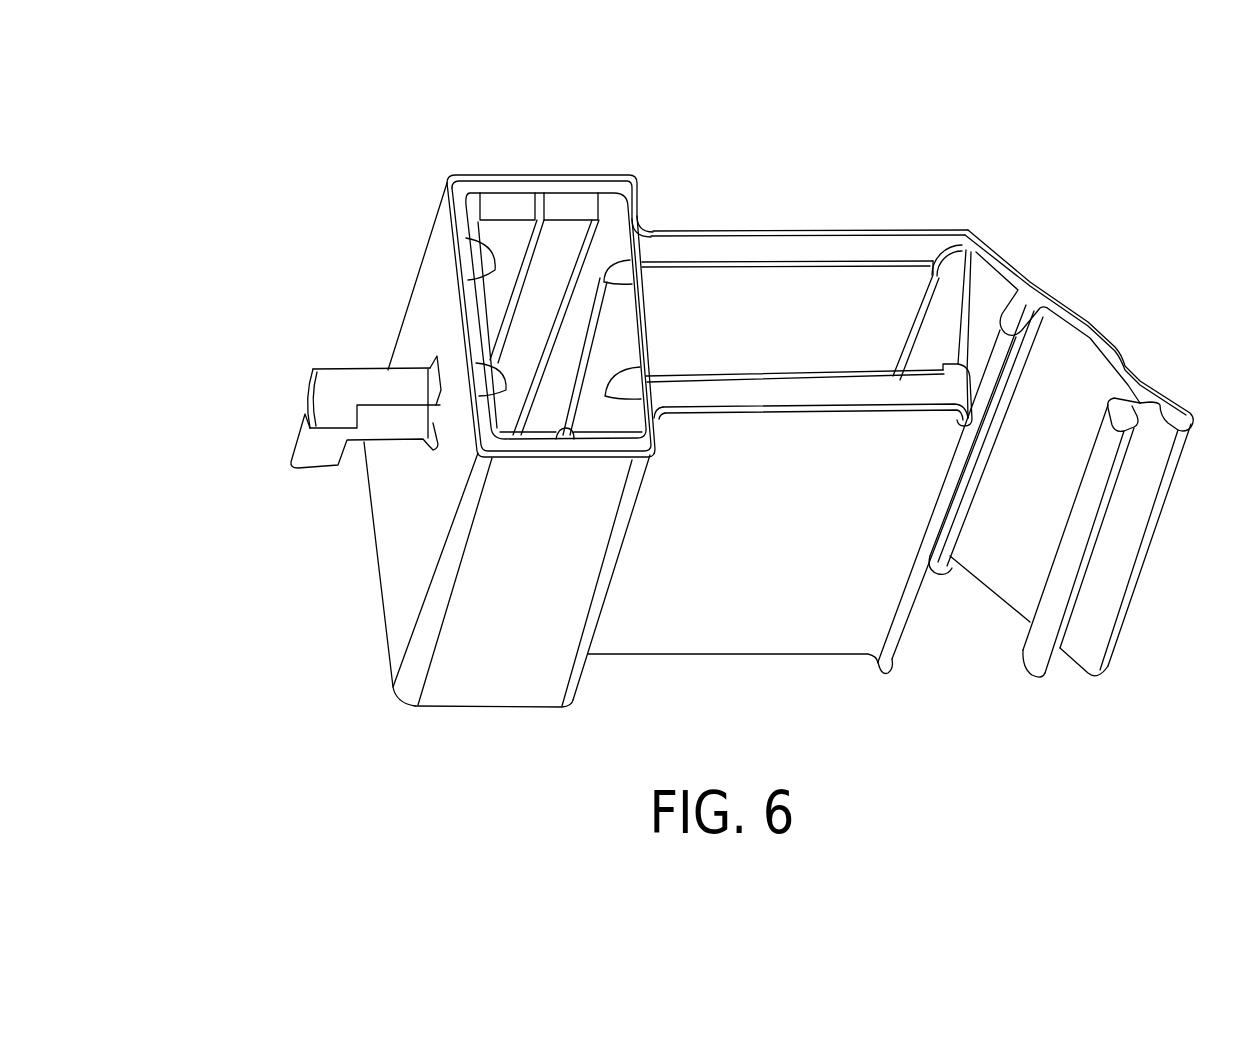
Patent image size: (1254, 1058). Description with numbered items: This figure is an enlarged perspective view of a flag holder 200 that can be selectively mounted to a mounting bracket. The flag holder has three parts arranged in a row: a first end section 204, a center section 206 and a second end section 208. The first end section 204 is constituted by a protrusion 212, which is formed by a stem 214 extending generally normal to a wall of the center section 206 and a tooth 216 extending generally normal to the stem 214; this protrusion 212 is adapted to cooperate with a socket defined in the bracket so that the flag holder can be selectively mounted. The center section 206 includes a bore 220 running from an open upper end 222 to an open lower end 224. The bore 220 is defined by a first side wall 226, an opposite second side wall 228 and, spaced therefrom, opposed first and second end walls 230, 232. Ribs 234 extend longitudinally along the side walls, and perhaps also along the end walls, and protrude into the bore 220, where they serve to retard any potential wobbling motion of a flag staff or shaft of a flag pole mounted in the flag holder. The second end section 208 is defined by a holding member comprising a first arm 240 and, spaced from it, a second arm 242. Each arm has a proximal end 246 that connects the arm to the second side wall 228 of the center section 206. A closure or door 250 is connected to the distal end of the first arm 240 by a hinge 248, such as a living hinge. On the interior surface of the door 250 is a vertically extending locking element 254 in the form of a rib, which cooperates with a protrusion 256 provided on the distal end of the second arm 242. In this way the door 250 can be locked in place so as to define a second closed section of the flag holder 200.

The flag holder 200 is at (807, 217).
The first end section 204 is at (333, 368).
The center section 206 is at (525, 172).
The second end section 208 is at (713, 231).
The protrusion 212 is at (302, 384).
The stem 214 is at (383, 378).
The tooth 216 is at (297, 437).
The bore 220 is at (562, 244).
The open upper end 222 is at (462, 188).
The open lower end 224 is at (464, 707).
The first side wall 226 is at (390, 568).
The second side wall 228 is at (660, 435).
The first end wall 230 is at (530, 690).
The second end wall 232 is at (480, 172).
The ribs 234 is at (492, 250).
The first arm 240 is at (893, 231).
The second arm 242 is at (800, 640).
The proximal end 246 is at (660, 388).
The hinge 248 is at (975, 242).
The door 250 is at (1087, 322).
The locking element 254 is at (1043, 650).
The protrusion 256 is at (893, 660).